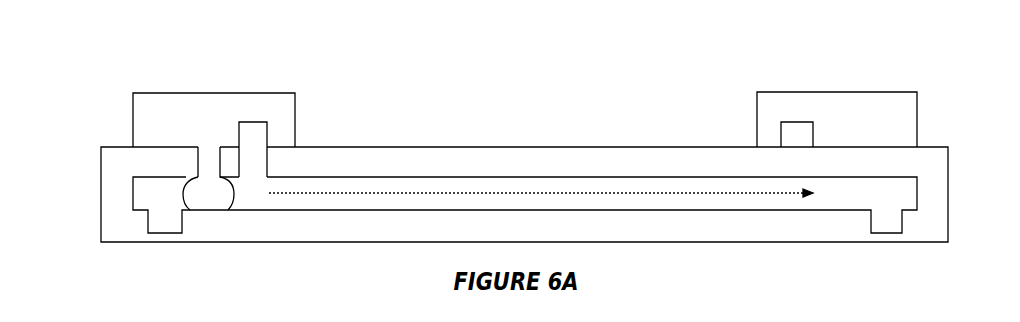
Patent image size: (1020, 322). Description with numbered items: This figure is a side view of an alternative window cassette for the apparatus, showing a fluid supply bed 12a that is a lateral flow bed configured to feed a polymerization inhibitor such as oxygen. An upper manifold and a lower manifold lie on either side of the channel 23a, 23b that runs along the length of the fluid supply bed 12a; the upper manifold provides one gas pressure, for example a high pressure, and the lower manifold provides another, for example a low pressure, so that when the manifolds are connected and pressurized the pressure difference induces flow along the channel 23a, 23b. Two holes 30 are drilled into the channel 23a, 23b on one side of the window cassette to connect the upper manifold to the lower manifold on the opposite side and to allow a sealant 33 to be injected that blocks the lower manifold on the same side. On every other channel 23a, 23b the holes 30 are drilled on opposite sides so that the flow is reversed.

The fluid supply bed 12a is at (110, 165).
The holes 30 is at (251, 175).
The channel 23a is at (512, 183).
The channel 23b is at (541, 193).
The sealant 33 is at (208, 200).